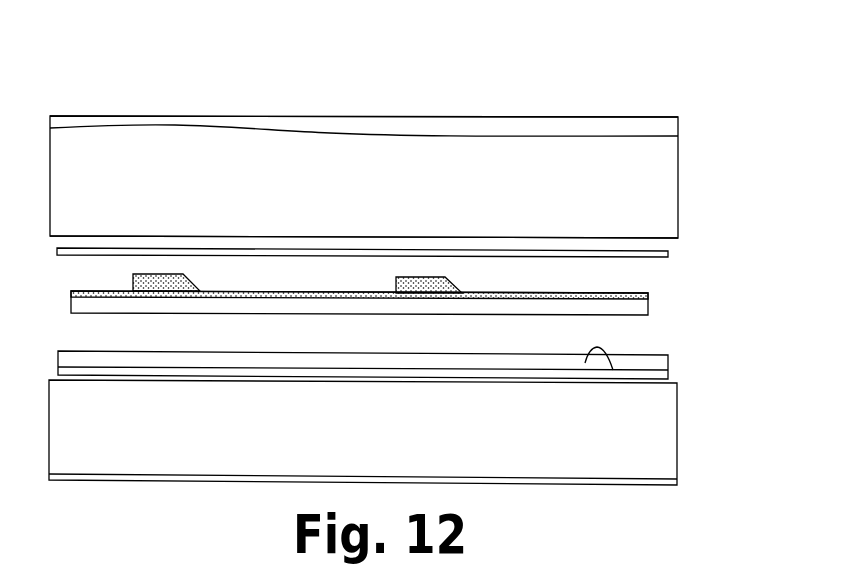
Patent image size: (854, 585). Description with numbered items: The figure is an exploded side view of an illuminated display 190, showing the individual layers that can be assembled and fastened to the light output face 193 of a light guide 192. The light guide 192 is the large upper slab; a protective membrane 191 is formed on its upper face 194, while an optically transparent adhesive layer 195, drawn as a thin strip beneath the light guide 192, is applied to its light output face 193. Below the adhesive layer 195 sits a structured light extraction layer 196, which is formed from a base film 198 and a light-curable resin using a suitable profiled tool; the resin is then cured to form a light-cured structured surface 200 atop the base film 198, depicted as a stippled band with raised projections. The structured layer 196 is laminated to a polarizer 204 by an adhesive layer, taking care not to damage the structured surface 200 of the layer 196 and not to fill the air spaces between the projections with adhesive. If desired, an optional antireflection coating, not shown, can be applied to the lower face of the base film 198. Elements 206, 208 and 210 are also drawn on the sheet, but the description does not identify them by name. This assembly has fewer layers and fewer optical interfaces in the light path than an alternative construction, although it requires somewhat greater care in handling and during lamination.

The illuminated display 190 is at (532, 95).
The protective membrane 191 is at (662, 129).
The light guide 192 is at (657, 198).
The light output face 193 is at (540, 238).
The upper face 194 is at (625, 138).
The optically transparent adhesive layer 195 is at (668, 254).
The structured light extraction layer 196 is at (660, 298).
The base film 198 is at (622, 308).
The light-cured structured surface 200 is at (493, 294).
The polarizer 204 is at (650, 362).
The adhesive layer 206 is at (657, 378).
The raised protrusion 208 is at (585, 363).
The lower substrate 210 is at (618, 448).